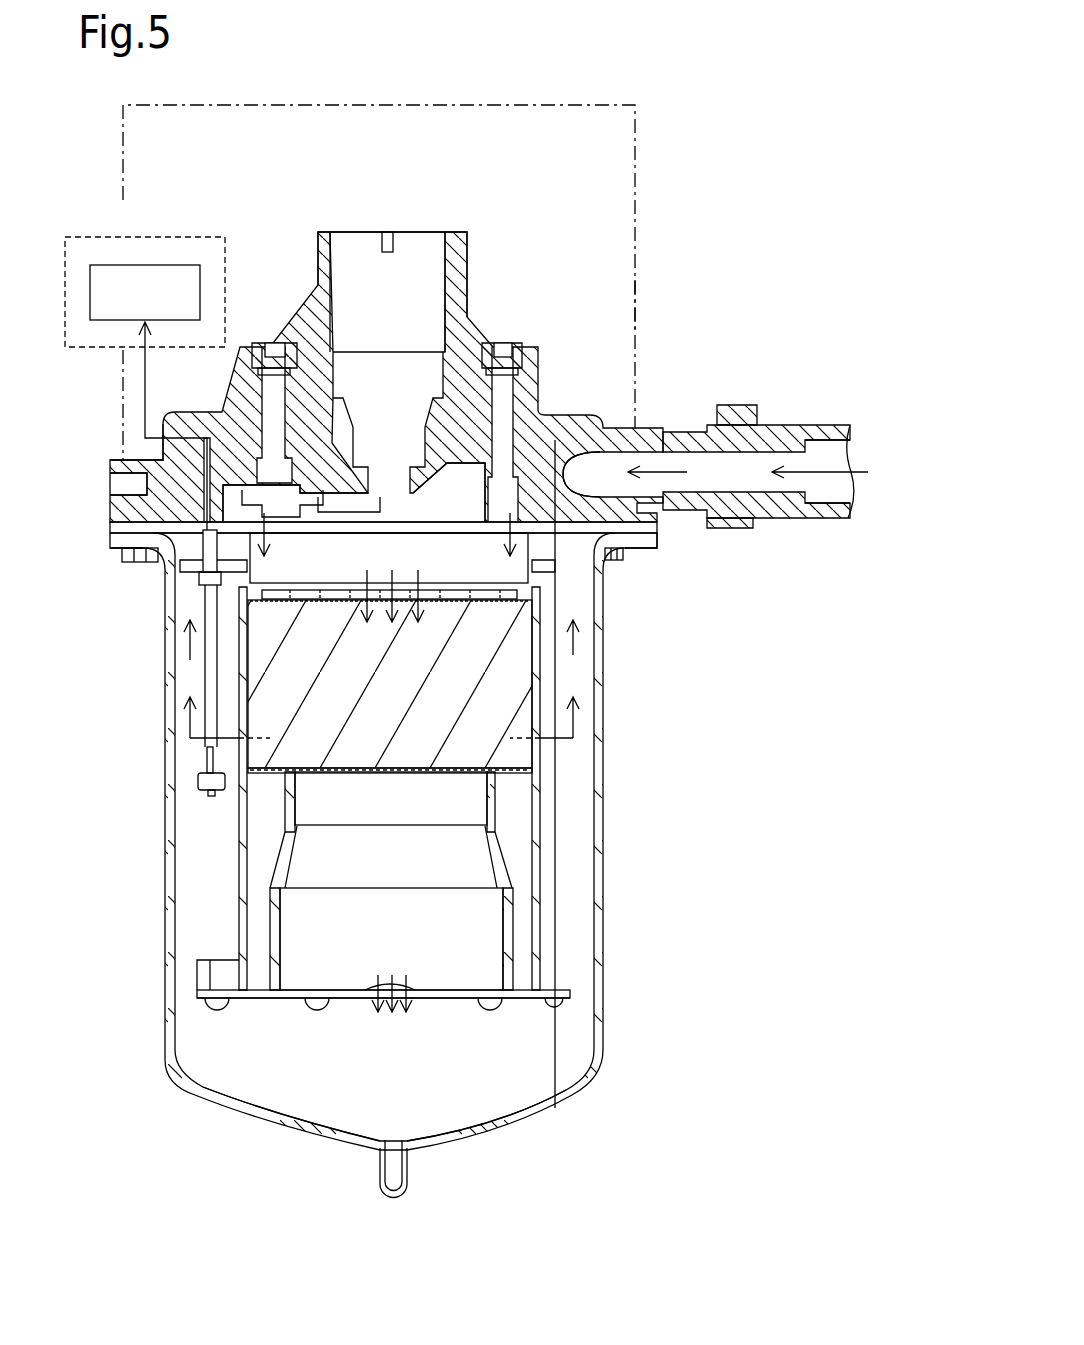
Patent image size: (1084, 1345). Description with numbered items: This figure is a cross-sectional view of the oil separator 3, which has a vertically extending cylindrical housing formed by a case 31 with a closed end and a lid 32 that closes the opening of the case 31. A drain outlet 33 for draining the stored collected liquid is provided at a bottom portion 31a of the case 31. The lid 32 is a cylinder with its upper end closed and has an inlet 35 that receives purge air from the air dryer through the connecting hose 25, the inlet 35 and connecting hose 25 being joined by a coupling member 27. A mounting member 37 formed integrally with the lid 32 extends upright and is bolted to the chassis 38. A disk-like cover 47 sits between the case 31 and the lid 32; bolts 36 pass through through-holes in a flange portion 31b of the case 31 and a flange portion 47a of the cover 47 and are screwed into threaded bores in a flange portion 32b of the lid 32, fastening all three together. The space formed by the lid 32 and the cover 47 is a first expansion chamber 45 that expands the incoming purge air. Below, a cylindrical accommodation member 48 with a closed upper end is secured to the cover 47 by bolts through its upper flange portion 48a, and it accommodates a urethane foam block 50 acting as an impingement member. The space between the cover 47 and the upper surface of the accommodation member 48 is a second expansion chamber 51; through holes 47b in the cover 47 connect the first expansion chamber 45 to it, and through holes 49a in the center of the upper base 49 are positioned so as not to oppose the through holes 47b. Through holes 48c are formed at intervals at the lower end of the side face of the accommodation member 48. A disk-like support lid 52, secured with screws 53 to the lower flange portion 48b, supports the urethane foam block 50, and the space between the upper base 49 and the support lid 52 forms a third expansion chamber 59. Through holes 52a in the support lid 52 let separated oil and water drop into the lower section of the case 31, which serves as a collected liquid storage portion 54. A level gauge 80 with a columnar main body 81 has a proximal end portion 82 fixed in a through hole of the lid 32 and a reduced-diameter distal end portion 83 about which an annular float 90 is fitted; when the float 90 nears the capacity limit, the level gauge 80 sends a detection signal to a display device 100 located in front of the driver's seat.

The oil separator 3 is at (659, 217).
The connecting hose 25 is at (816, 518).
The coupling member 27 is at (690, 432).
The case 31 is at (604, 955).
The bottom portion 31a is at (518, 1132).
The flange portion 31b is at (110, 545).
The lid 32 is at (215, 404).
The flange portion 32b is at (110, 501).
The drain outlet 33 is at (407, 1177).
The inlet 35 is at (655, 450).
The bolts 36 is at (140, 562).
The mounting member 37 is at (488, 321).
The chassis 38 is at (636, 299).
The first expansion chamber 45 is at (467, 514).
The cover 47 is at (319, 519).
The flange portion 47a is at (110, 527).
The through holes 47b is at (268, 549).
The accommodation member 48 is at (240, 674).
The flange portion 48a is at (186, 572).
The flange portion 48b is at (197, 978).
The through holes 48c is at (240, 746).
The upper base 49 is at (296, 582).
The through holes 49a is at (360, 605).
The urethane foam block 50 is at (542, 682).
The second expansion chamber 51 is at (391, 562).
The support lid 52 is at (250, 998).
The through holes 52a is at (405, 978).
The screws 53 is at (214, 1010).
The collected liquid storage portion 54 is at (449, 1094).
The third expansion chamber 59 is at (431, 725).
The level gauge 80 is at (195, 810).
The main body 81 is at (175, 616).
The proximal end portion 82 is at (203, 533).
The distal end portion 83 is at (198, 778).
The float 90 is at (217, 796).
The display device 100 is at (145, 265).